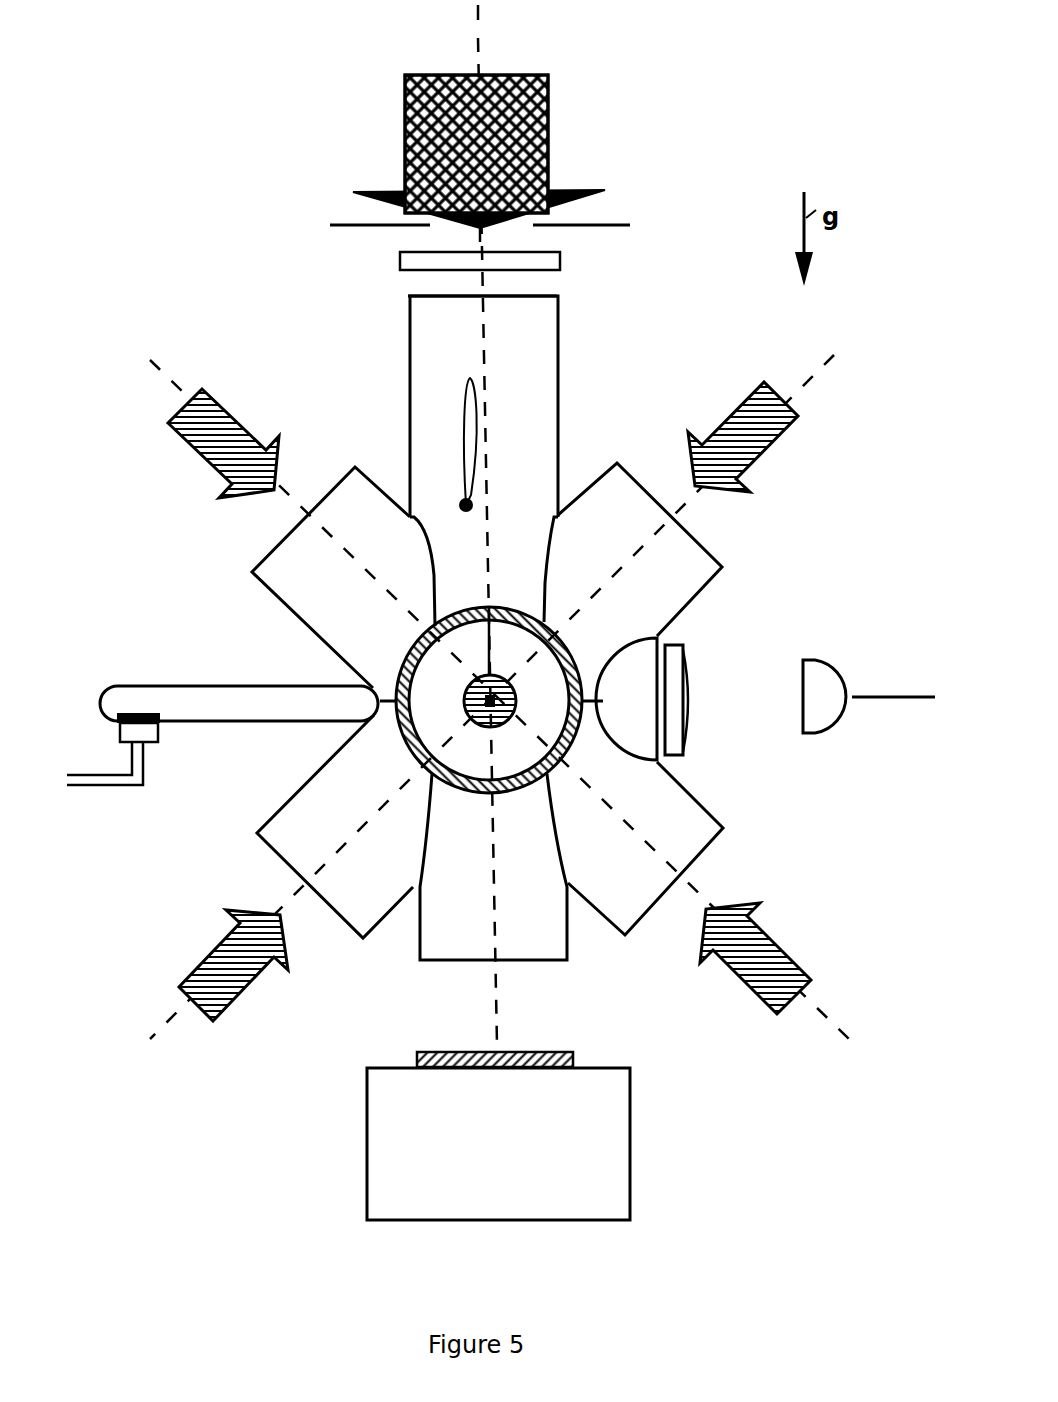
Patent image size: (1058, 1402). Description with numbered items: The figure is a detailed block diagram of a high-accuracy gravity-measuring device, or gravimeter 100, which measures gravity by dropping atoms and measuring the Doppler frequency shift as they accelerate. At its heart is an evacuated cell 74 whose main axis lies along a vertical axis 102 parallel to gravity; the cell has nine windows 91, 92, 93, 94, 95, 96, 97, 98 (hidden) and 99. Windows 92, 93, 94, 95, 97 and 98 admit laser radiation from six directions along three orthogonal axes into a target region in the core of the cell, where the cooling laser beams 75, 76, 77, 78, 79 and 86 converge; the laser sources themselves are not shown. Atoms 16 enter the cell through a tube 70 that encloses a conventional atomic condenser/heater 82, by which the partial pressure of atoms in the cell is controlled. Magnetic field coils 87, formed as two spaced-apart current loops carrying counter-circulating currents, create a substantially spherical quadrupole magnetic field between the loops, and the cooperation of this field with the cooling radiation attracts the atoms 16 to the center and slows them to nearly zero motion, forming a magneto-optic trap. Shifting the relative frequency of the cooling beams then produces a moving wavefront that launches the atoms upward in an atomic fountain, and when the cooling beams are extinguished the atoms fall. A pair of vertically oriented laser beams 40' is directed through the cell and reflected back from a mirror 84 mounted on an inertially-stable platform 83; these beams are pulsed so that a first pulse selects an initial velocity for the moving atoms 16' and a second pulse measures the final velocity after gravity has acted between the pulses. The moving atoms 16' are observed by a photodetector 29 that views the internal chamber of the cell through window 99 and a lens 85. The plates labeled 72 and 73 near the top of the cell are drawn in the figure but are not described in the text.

The gravimeter 100 is at (196, 188).
The vertical axis 102 is at (480, 47).
The vertically oriented laser beams 40' is at (512, 144).
The funnel plate 72 is at (612, 222).
The window plate 73 is at (560, 258).
The window 91 is at (410, 297).
The evacuated cell 74 is at (558, 372).
The moving atoms 16' is at (407, 441).
The atoms 16 is at (316, 641).
The window 92 is at (622, 463).
The window 93 is at (723, 829).
The window 94 is at (265, 845).
The window 95 is at (262, 565).
The cooling laser beam 75 is at (778, 437).
The cooling laser beam 76 is at (228, 410).
The cooling laser beam 77 is at (212, 953).
The cooling laser beam 78 is at (772, 937).
The magnetic field coils 87 is at (570, 650).
The window 97 is at (415, 775).
The cooling laser beam 79 is at (465, 718).
The window 99 is at (657, 640).
The lens 85 is at (687, 745).
The photodetector 29 is at (848, 712).
The tube 70 is at (178, 684).
The atomic condenser/heater 82 is at (115, 732).
The window 98 is at (308, 737).
The cooling laser beam 86 is at (298, 761).
The window 96 is at (433, 962).
The mirror 84 is at (577, 1050).
The inertially-stable platform 83 is at (630, 1157).